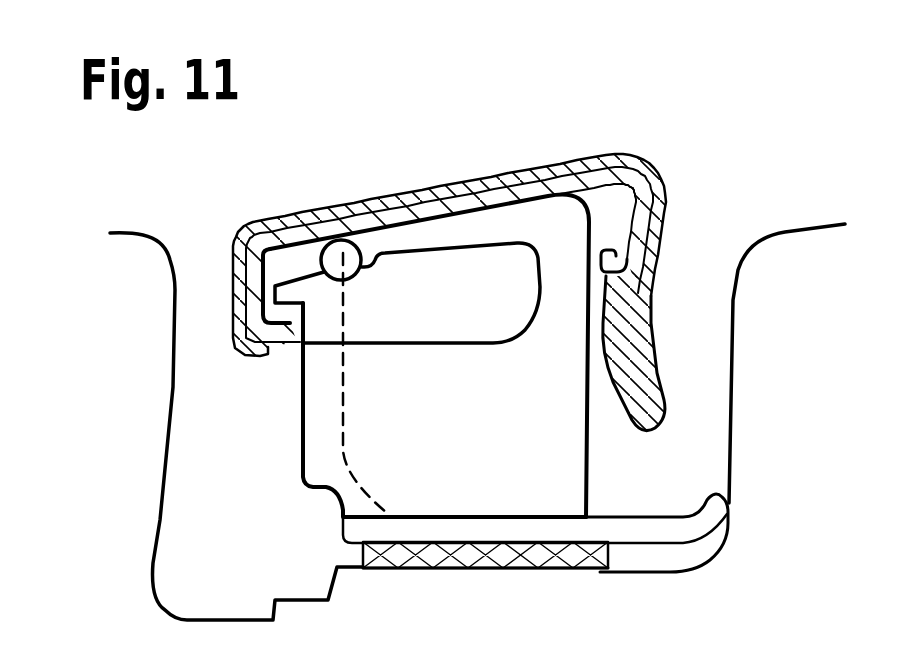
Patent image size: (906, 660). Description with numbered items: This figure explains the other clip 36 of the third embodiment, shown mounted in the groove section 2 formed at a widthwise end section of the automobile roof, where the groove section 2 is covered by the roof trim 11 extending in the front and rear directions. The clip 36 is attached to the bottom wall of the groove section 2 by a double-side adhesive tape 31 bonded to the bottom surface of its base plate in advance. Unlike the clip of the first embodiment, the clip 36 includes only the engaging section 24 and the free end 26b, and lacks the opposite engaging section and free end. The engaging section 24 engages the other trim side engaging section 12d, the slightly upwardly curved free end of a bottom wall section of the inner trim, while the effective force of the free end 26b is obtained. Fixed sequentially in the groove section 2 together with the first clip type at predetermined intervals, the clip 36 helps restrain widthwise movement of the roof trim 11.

The groove section 2 is at (192, 265).
The roof trim 11 is at (478, 180).
The trim side engaging section 12d is at (263, 313).
The engaging section 24 is at (308, 283).
The free end 26b is at (412, 230).
The double-side adhesive tape 31 is at (433, 557).
The clip 36 is at (596, 221).